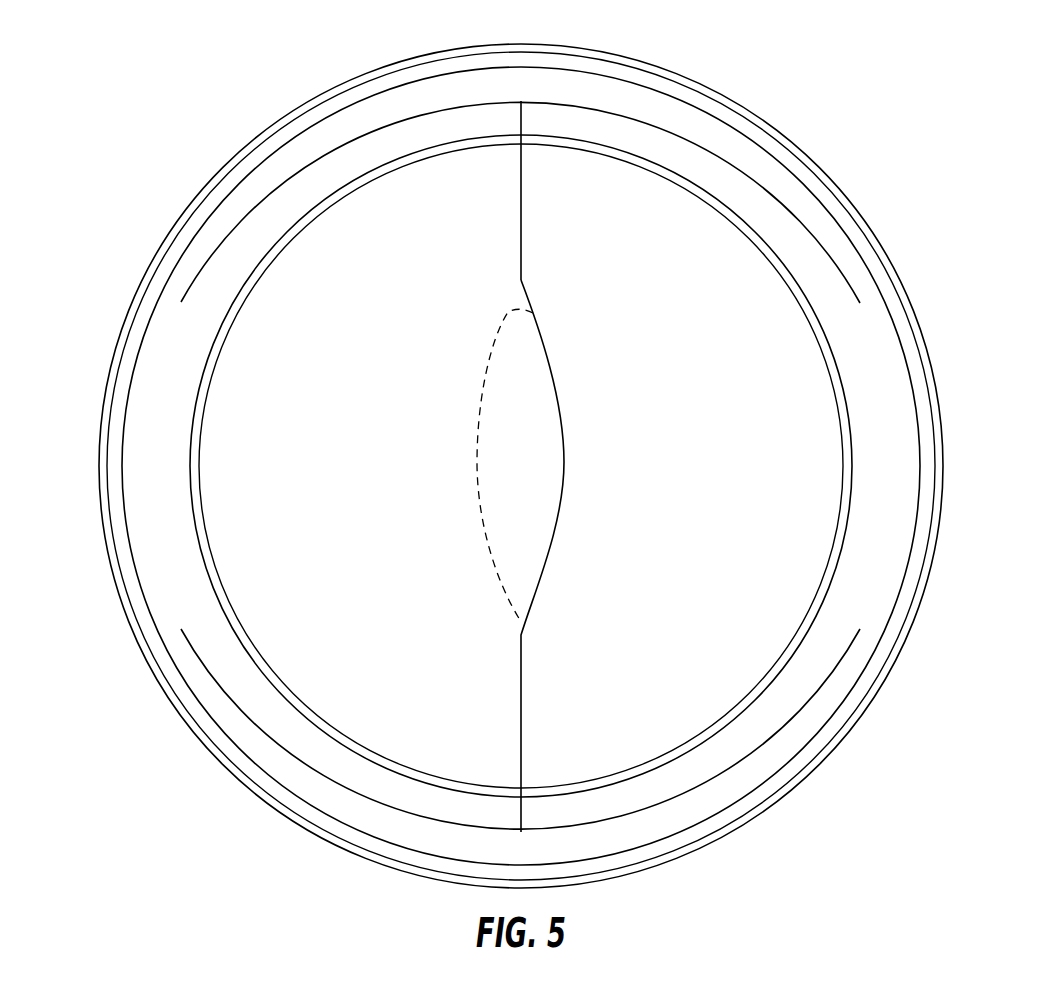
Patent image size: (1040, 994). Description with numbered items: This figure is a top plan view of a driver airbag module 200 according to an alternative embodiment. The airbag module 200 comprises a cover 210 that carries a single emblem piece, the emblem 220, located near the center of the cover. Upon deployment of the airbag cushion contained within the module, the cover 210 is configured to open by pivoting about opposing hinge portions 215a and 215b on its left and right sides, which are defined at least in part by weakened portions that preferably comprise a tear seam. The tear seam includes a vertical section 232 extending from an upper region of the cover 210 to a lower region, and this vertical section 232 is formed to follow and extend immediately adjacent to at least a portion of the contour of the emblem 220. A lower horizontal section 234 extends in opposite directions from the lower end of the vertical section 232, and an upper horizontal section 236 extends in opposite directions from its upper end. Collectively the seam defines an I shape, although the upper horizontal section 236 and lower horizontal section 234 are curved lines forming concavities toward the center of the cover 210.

The airbag module 200 is at (940, 78).
The cover 210 is at (890, 497).
The hinge portion 215a is at (178, 435).
The hinge portion 215b is at (864, 435).
The emblem 220 is at (525, 452).
The vertical section 232 is at (522, 202).
The lower horizontal section 234 is at (433, 822).
The upper horizontal section 236 is at (433, 112).